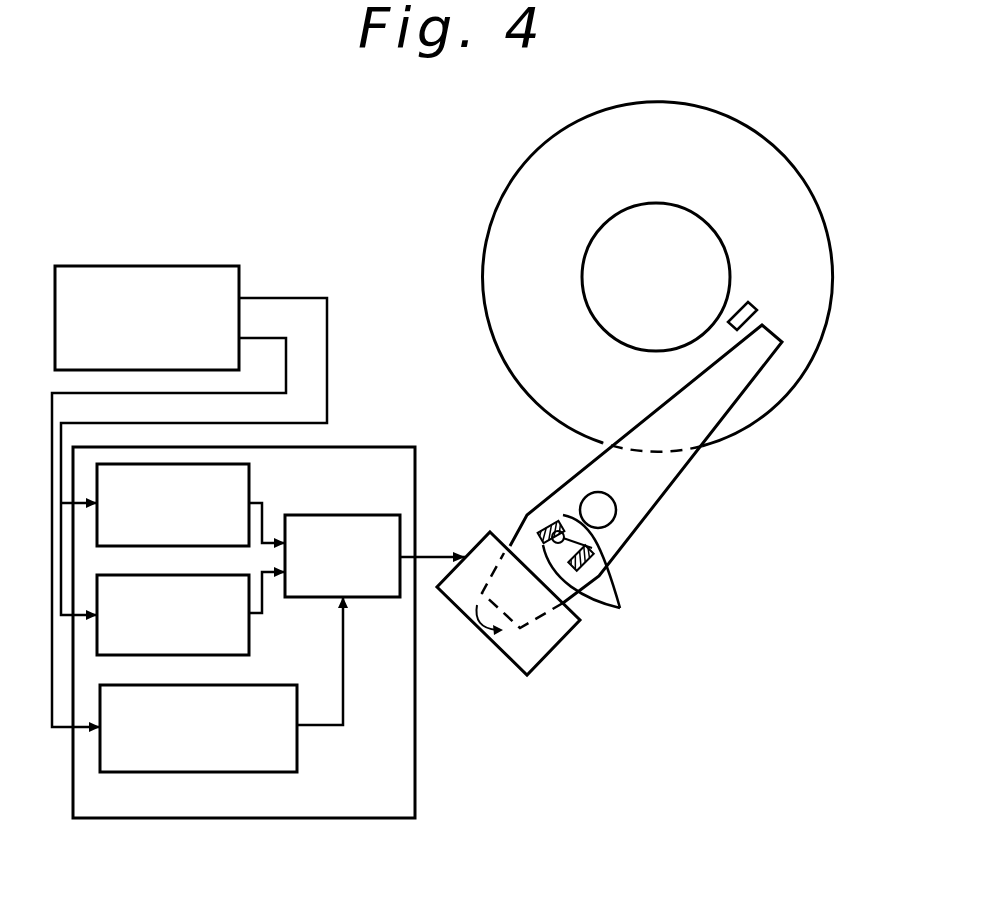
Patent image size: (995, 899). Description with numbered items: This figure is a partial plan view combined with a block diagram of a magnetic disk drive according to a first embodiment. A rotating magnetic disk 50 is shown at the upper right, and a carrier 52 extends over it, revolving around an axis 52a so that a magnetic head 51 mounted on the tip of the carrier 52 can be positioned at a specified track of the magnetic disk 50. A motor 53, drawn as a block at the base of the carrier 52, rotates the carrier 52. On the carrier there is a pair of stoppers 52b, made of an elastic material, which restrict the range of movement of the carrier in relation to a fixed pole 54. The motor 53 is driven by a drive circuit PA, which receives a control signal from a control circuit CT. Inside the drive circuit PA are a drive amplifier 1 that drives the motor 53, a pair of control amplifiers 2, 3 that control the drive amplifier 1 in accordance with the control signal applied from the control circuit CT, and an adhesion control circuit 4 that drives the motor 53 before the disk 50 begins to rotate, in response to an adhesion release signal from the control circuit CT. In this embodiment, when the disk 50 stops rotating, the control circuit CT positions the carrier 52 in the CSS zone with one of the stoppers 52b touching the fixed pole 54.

The drive amplifier 1 is at (360, 514).
The control amplifier 2 is at (250, 480).
The control amplifier 3 is at (250, 645).
The adhesion control circuit 4 is at (297, 753).
The control circuit CT is at (212, 265).
The drive circuit PA is at (362, 444).
The magnetic disk 50 is at (498, 198).
The magnetic head 51 is at (758, 312).
The carrier 52 is at (657, 495).
The axis 52a is at (592, 500).
The stoppers 52b is at (620, 608).
The motor 53 is at (563, 643).
The fixed pole 54 is at (568, 540).